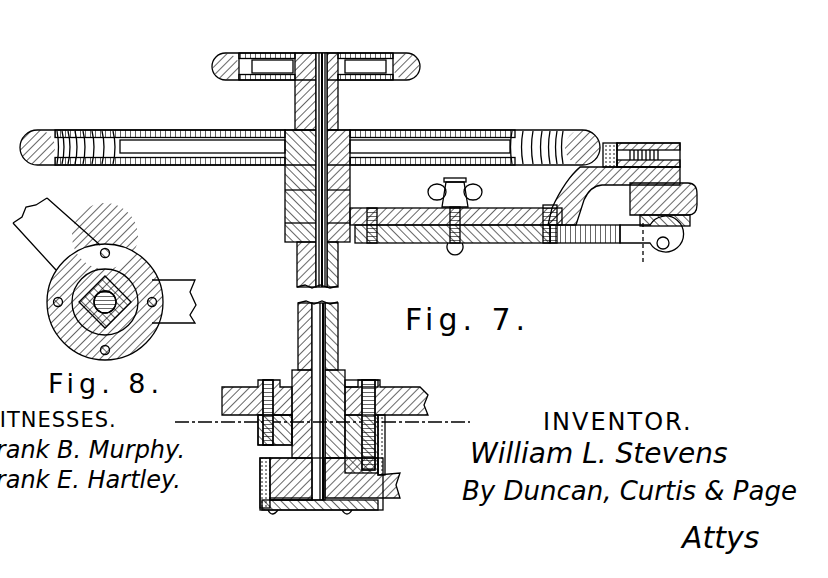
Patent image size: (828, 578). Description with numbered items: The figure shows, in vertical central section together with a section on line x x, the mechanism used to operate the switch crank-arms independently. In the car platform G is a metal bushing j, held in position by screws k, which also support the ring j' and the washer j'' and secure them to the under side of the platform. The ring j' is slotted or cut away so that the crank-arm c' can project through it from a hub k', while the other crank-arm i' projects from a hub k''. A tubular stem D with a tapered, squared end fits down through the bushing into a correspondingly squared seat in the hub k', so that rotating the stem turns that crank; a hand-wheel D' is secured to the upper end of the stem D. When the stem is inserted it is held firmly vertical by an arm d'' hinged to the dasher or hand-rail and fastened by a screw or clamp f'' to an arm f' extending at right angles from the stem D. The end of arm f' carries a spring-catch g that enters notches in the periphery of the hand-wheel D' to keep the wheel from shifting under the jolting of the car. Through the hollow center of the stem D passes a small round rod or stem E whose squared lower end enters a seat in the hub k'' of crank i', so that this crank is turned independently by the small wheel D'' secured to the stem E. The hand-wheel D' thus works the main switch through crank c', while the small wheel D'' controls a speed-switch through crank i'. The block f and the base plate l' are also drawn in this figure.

In FIG. 7, the small wheel D'' is at (336, 66).
In FIG. 7, the hand-wheel D' is at (310, 137).
In FIG. 7, the rod or stem E is at (320, 53).
In FIG. 7, the arm d'' is at (517, 240).
In FIG. 7, the spring-catch g is at (618, 145).
In FIG. 7, the block f is at (675, 204).
In FIG. 7, the screw or clamp f'' is at (424, 215).
In FIG. 7, the arm f' is at (537, 216).
In FIG. 7, the tubular stem D is at (307, 400).
In FIG. 7, the platform G is at (428, 401).
In FIG. 7, the section line x is at (322, 422).
In FIG. 7, the screws k is at (368, 411).
In FIG. 7, the metal bushing j is at (371, 376).
In FIG. 7, the ring j' is at (374, 445).
In FIG. 7, the hub k' is at (267, 419).
In FIG. 7, the washer j'' is at (250, 483).
In FIG. 7, the crank-arm i' is at (335, 484).
In FIG. 8, the crank-arm i' is at (174, 301).
In FIG. 7, the base plate l' is at (320, 518).
In FIG. 7, the hub k'' is at (291, 514).
In FIG. 8, the crank-arm c' is at (56, 234).